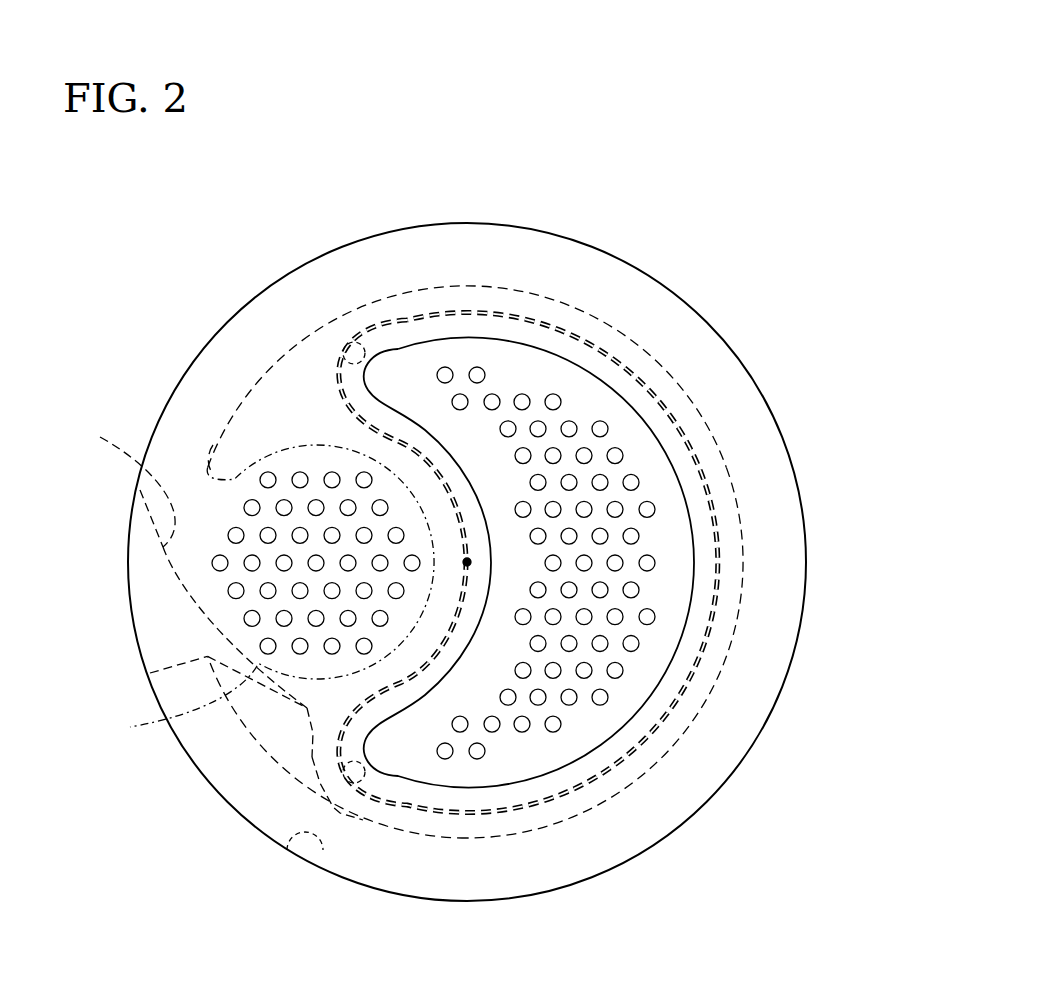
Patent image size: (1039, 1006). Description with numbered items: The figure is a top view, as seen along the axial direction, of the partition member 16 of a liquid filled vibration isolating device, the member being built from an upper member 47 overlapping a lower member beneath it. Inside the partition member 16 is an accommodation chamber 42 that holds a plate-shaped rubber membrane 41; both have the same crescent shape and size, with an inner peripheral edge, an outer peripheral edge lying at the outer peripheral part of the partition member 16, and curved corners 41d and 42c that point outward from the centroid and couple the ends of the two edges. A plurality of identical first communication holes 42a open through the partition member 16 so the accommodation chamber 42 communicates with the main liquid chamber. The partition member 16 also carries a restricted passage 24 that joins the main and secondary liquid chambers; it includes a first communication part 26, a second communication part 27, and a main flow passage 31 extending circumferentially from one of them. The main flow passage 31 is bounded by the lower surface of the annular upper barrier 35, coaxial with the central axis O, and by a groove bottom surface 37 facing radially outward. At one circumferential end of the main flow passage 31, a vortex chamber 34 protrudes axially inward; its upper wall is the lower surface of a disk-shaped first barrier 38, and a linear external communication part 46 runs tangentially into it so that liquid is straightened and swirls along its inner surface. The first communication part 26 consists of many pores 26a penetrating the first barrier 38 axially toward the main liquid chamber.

The partition member 16 is at (633, 262).
The restricted passage 24 is at (452, 250).
The central axis O is at (467, 562).
The corner of accommodation chamber 42c is at (350, 342).
The corner of membrane 41d is at (315, 392).
The first barrier 38 is at (258, 462).
The external communication part 46 is at (140, 465).
The pore 26a is at (212, 566).
The upper member 47 is at (148, 590).
The first communication part 26 is at (243, 618).
The vortex chamber 34 is at (307, 713).
The second communication part 27 is at (300, 842).
The first communication hole 42a is at (655, 565).
The main flow passage 31 is at (622, 830).
The upper barrier 35 is at (700, 778).
The groove bottom surface 37 is at (728, 682).
The membrane 41 is at (700, 440).
The accommodation chamber 42 is at (613, 365).